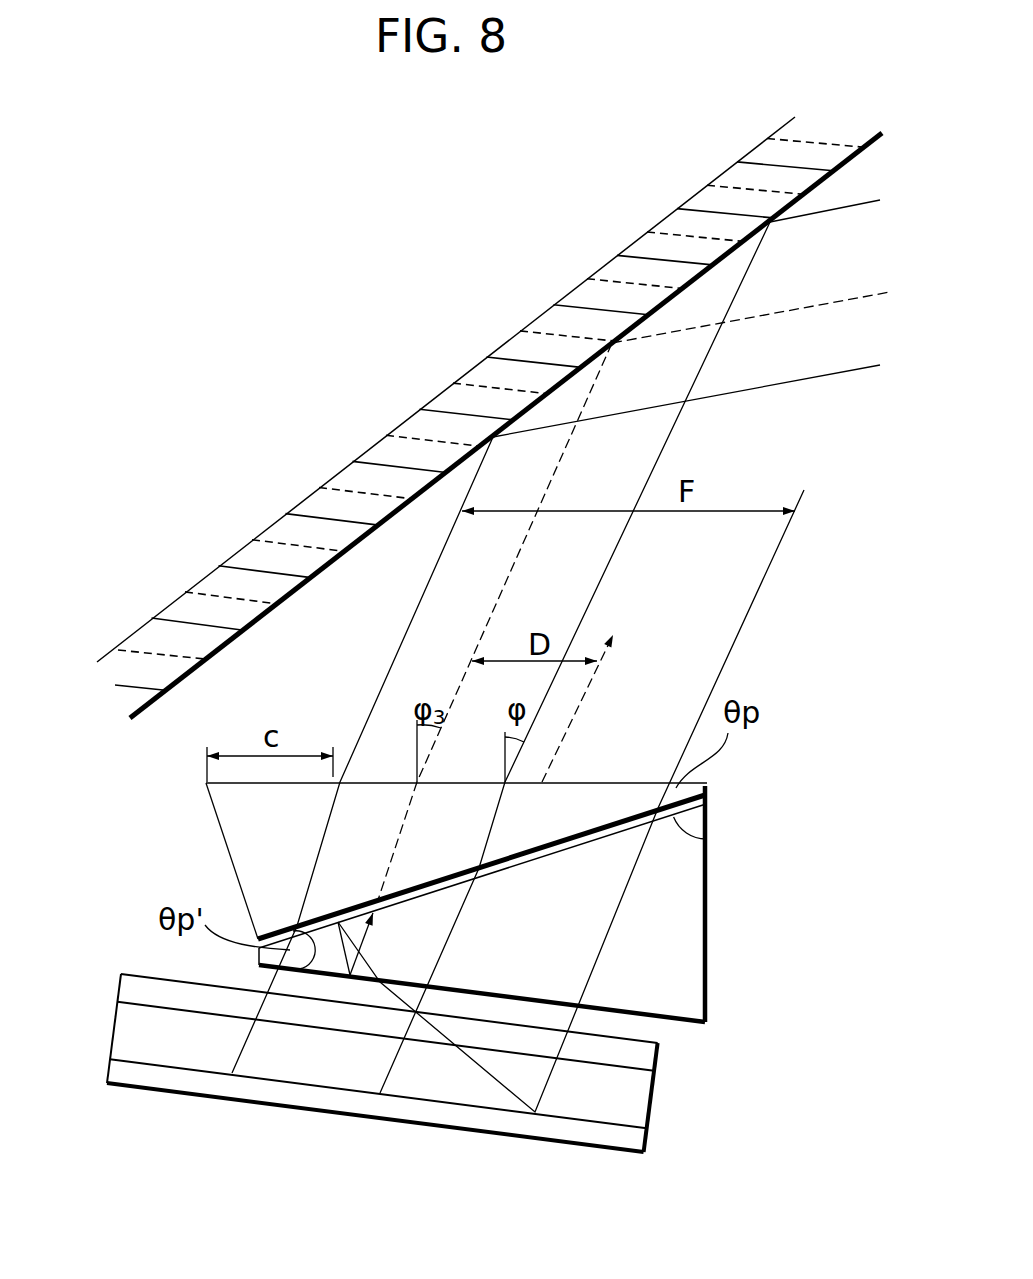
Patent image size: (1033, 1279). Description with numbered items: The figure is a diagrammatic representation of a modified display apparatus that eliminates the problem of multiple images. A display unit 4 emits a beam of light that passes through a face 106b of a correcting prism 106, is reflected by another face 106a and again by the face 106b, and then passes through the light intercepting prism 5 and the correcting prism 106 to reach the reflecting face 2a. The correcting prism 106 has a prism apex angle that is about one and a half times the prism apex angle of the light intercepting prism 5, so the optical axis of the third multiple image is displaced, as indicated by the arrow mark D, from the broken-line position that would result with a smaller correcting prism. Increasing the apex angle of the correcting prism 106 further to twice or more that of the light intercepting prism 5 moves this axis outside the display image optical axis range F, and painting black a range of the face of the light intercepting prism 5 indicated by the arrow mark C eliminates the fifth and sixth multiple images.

The reflecting face 2a is at (348, 467).
The light intercepting prism 5 is at (712, 790).
The correcting prism 106 is at (692, 906).
The face of correcting prism 106a is at (708, 830).
The face of correcting prism 106b is at (692, 1023).
The display unit 4 is at (653, 1093).